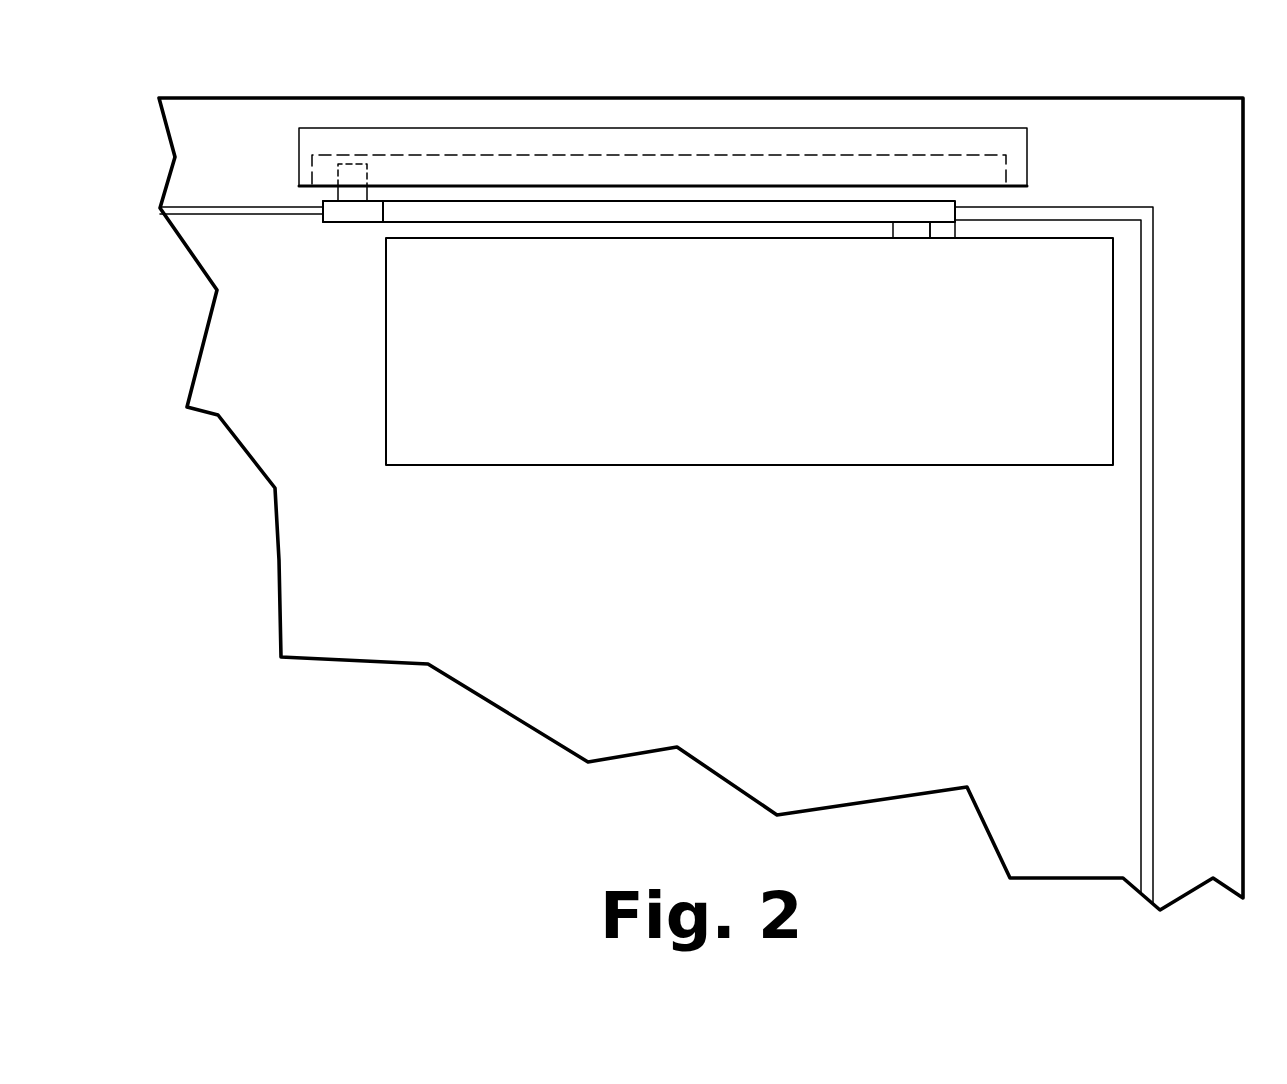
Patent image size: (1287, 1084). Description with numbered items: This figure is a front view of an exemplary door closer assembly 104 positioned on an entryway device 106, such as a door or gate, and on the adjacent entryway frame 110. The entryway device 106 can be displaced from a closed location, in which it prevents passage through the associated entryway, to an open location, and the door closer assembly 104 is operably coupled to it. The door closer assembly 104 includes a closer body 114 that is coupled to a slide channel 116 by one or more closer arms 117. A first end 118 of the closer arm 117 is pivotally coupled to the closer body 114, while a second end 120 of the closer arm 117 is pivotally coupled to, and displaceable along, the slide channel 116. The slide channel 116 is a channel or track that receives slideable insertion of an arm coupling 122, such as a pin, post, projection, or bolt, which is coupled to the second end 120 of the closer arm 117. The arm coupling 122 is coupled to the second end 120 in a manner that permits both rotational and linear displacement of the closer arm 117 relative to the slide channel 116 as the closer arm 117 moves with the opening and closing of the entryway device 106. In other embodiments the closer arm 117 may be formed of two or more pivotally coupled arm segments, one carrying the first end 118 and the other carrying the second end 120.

The door closer assembly 104 is at (300, 318).
The entryway device 106 is at (773, 640).
The entryway frame 110 is at (1108, 158).
The closer body 114 is at (463, 438).
The slide channel 116 is at (863, 138).
The closer arm 117 is at (557, 212).
The first end 118 is at (940, 210).
The second end 120 is at (347, 213).
The arm coupling 122 is at (350, 173).